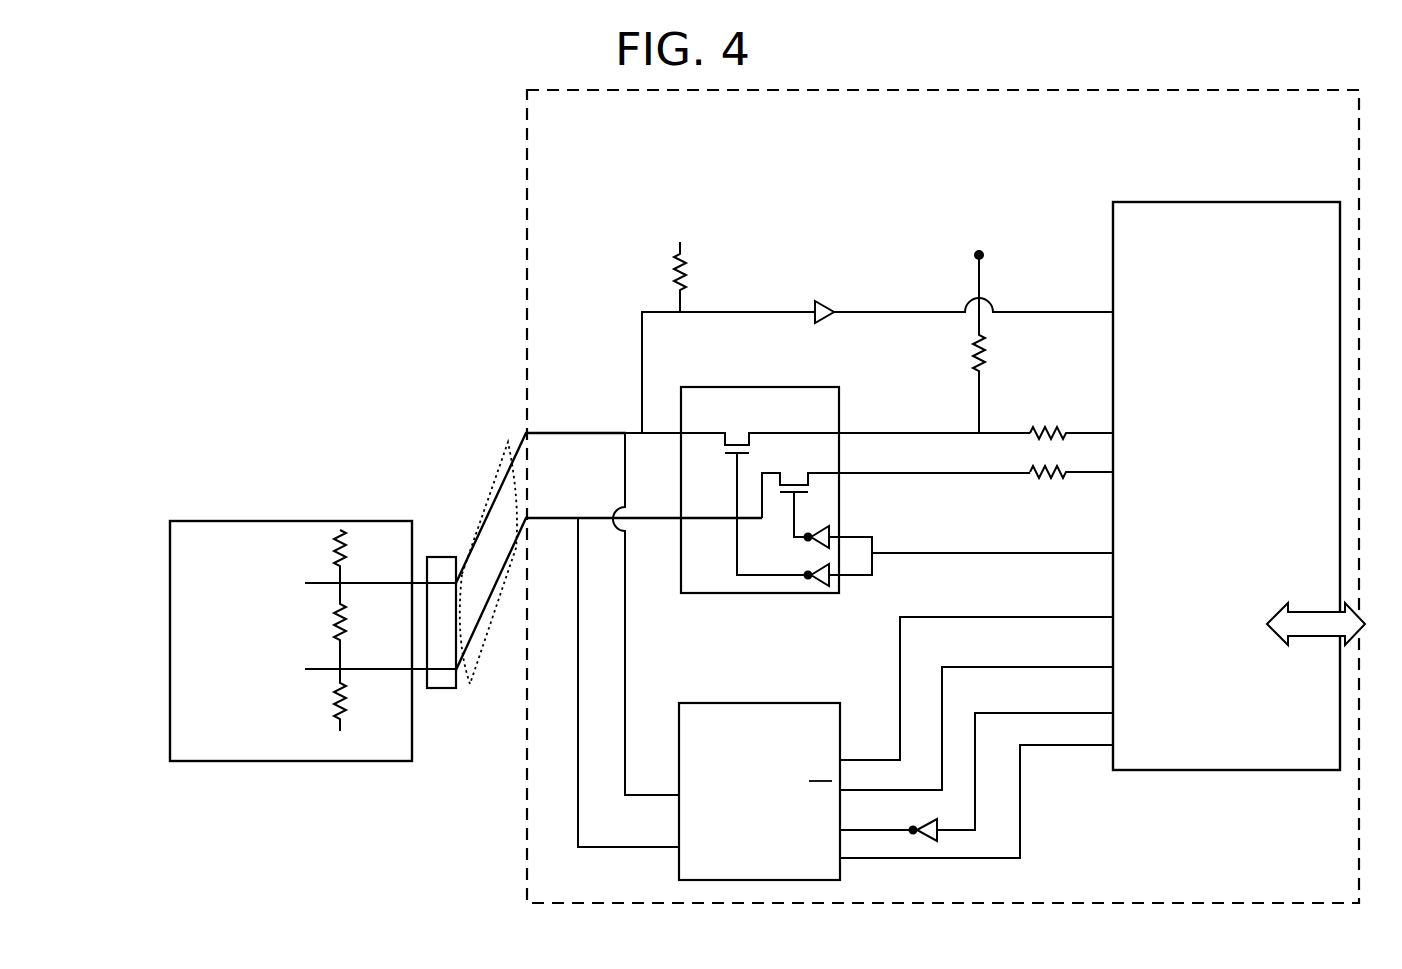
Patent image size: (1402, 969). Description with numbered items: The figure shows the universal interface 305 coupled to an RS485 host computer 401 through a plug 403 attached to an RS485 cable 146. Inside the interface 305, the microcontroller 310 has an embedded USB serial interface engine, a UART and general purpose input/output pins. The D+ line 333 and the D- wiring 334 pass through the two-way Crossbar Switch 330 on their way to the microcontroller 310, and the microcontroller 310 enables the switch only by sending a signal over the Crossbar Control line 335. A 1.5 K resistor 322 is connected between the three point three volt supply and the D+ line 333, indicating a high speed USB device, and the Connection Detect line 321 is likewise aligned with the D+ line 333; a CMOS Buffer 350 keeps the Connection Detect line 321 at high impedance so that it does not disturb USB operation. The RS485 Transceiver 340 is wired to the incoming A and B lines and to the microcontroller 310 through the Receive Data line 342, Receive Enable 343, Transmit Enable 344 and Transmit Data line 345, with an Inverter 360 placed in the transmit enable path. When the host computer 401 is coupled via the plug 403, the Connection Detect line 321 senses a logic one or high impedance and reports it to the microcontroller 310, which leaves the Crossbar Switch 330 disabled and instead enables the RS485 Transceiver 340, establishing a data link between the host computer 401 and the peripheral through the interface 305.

The universal interface 305 is at (1198, 90).
The microcontroller 310 is at (1197, 486).
The Connection Detect line 321 is at (767, 355).
The 1.5 K resistor 322 is at (968, 362).
The Crossbar Switch 330 is at (826, 391).
The D+ line 333 is at (862, 422).
The D- wiring 334 is at (862, 468).
The Crossbar Control line 335 is at (972, 540).
The RS485 Transceiver 340 is at (752, 703).
The Receive Data line 342 is at (1040, 596).
The Receive Enable 343 is at (937, 652).
The Transmit Enable 344 is at (950, 696).
The Transmit Data line 345 is at (1063, 772).
The CMOS Buffer 350 is at (820, 303).
The Inverter 360 is at (918, 826).
The RS485 host computer 401 is at (305, 521).
The plug 403 is at (436, 557).
The cable 146 is at (492, 628).